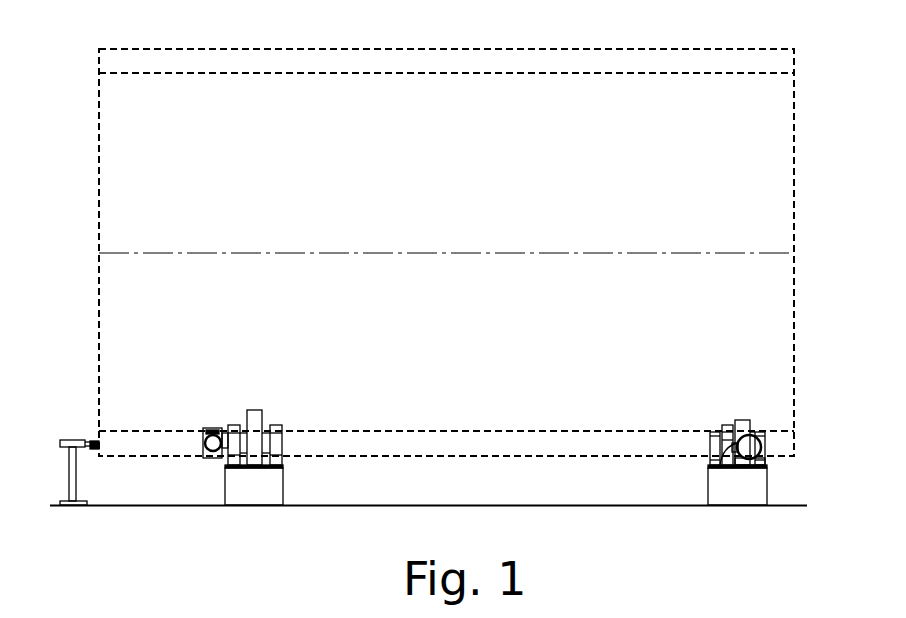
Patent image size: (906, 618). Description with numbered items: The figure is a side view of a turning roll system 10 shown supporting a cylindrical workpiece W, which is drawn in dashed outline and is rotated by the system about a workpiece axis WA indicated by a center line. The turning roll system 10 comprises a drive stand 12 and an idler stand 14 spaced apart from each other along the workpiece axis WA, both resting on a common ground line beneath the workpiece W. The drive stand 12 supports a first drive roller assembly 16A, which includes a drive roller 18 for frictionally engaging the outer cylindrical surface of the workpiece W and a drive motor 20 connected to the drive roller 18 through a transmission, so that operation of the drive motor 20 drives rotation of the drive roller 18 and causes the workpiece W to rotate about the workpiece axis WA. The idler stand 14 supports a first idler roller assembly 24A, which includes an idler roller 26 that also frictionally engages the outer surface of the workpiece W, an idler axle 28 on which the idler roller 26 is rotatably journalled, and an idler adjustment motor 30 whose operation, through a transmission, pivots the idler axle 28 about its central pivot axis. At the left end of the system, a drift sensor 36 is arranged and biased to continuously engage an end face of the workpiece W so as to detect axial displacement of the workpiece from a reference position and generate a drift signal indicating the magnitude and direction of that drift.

The turning roll system 10 is at (532, 362).
The drive stand 12 is at (708, 488).
The idler stand 14 is at (283, 490).
The first drive roller assembly 16A is at (715, 444).
The drive roller 18 is at (745, 420).
The drive motor 20 is at (762, 452).
The first idler roller assembly 24A is at (224, 434).
The idler roller 26 is at (256, 410).
The idler axle 28 is at (270, 428).
The idler adjustment motor 30 is at (212, 470).
The drift sensor 36 is at (75, 440).
The workpiece W is at (482, 49).
The workpiece axis WA is at (389, 253).